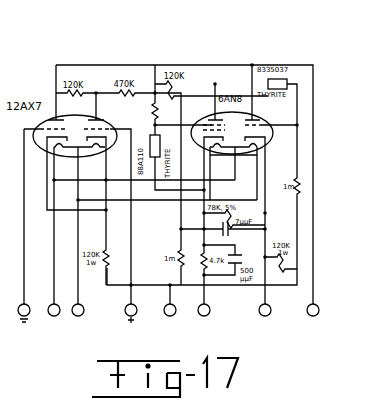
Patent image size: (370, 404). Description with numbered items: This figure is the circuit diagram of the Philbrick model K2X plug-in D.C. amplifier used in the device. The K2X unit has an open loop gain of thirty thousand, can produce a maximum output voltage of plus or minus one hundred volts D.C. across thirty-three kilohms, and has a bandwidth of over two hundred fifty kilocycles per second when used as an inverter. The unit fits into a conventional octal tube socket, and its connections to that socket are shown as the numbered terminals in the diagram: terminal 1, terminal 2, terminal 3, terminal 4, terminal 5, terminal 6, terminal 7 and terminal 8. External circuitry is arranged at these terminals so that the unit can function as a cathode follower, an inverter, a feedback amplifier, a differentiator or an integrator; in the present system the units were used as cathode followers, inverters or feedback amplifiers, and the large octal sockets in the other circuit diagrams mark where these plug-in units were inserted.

The input terminal 1 is at (131, 319).
The input terminal 2 is at (24, 319).
The -300V d.c. supply terminal 3 is at (170, 320).
The ground reference terminal 4 is at (204, 320).
The +300V d.c. supply terminal 5 is at (315, 320).
The output terminal 6 is at (266, 316).
The heater terminal 6.3V 7 is at (59, 320).
The heater terminal 8 is at (78, 316).